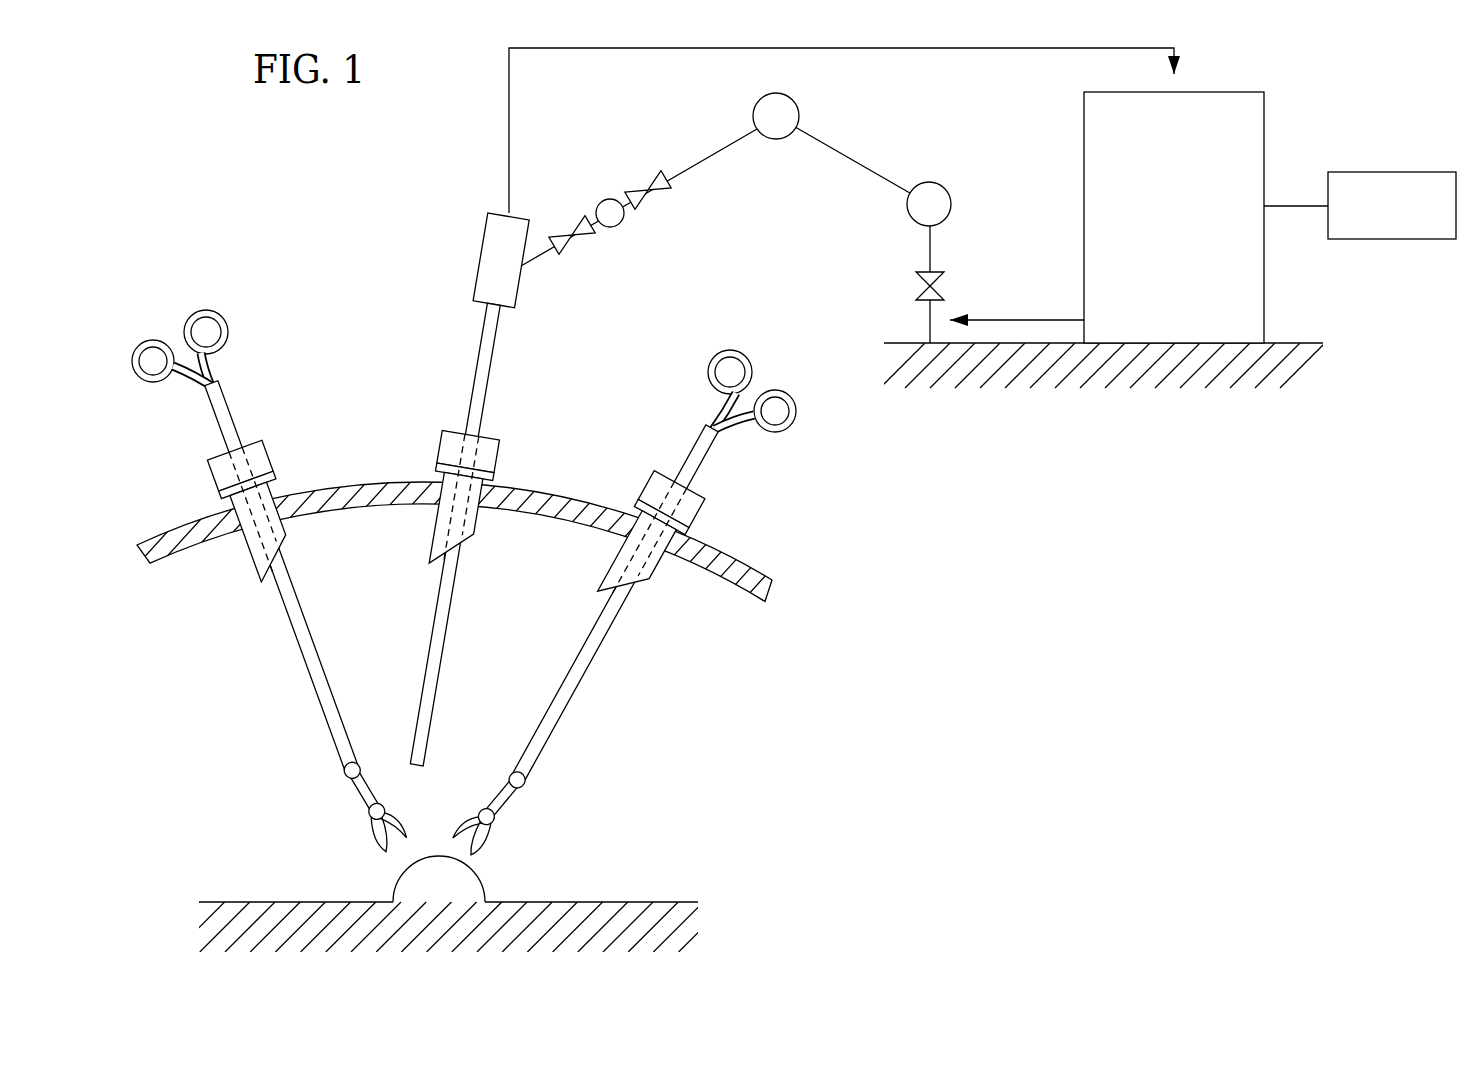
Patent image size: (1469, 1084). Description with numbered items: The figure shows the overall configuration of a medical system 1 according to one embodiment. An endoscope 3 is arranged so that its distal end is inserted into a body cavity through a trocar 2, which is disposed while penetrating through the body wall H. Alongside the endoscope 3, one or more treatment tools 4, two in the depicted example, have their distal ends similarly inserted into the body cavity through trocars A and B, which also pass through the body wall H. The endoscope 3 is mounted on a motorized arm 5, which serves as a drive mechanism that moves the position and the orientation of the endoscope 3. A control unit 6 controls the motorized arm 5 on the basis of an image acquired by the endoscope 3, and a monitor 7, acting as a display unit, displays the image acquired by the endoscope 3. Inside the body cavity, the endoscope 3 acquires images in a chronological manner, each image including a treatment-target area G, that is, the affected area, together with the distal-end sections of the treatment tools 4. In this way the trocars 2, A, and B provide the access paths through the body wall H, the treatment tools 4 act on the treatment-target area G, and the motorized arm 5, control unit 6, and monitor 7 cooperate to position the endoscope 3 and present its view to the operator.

The medical system 1 is at (178, 163).
The trocar 2 is at (497, 455).
The endoscope 3 is at (417, 634).
The treatment tools 4 is at (300, 670).
The motorized arm 5 is at (678, 143).
The control unit 6 is at (1264, 290).
The monitor 7 is at (1381, 171).
The trocar A is at (265, 451).
The trocar B is at (705, 515).
The body wall H is at (153, 540).
The treatment-target area G is at (480, 871).